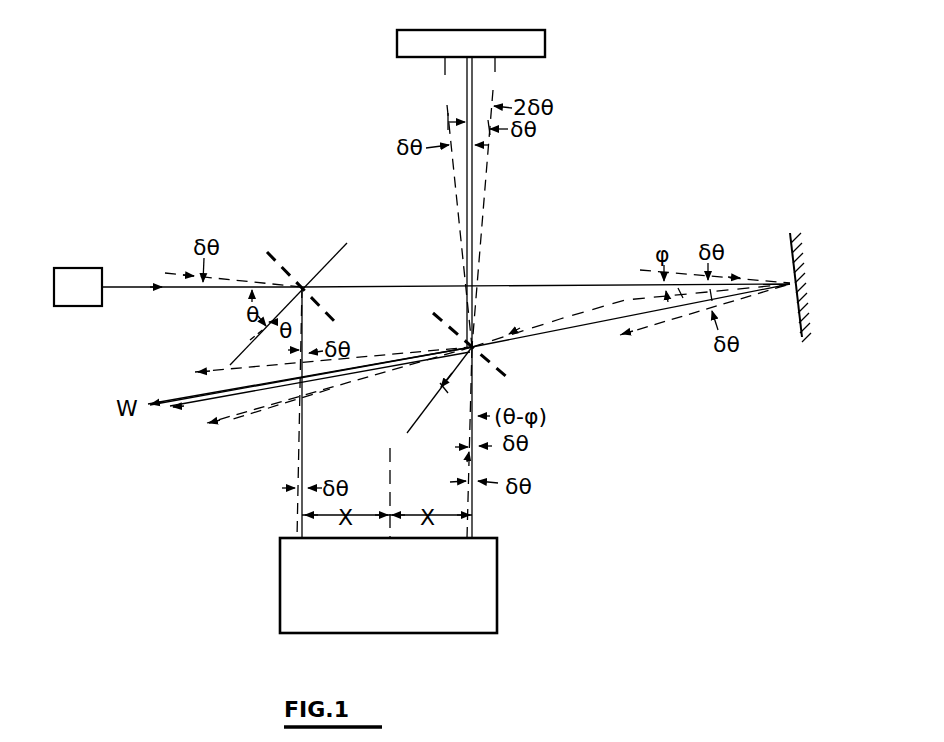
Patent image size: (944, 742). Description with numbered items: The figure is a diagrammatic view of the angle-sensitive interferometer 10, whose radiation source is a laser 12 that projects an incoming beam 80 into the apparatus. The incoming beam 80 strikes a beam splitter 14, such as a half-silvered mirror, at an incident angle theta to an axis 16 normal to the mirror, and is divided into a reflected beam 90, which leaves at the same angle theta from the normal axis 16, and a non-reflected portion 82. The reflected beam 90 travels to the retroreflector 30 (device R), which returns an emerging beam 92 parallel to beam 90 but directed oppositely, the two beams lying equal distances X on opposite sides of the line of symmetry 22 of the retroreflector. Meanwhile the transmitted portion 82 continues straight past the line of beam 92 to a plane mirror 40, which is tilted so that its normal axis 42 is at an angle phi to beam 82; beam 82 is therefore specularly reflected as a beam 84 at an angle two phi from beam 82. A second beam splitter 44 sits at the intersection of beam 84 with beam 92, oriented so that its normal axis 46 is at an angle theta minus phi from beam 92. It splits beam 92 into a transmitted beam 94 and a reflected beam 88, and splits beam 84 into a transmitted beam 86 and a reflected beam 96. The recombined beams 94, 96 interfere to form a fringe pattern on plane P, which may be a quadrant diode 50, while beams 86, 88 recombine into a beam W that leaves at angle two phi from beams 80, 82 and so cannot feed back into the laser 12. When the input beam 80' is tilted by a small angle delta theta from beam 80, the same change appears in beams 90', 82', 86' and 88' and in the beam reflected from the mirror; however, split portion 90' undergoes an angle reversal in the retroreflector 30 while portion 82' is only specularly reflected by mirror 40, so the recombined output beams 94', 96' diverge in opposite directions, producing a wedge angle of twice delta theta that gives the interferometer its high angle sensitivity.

The angle-sensitive interferometer 10 is at (568, 216).
The laser 12 is at (88, 268).
The beam splitter 14 is at (290, 273).
The normal axis 16 is at (236, 352).
The line of symmetry 22 is at (394, 471).
The retroreflector 30 is at (280, 591).
The mirror 40 is at (797, 324).
The normal axis 42 is at (618, 300).
The second beam splitter 44 is at (465, 344).
The normal axis 46 is at (467, 318).
The quadrant diode 50 is at (546, 42).
The incoming beam 80 is at (196, 311).
The input beam 80' is at (209, 258).
The non-reflected portion of beam 82 is at (546, 260).
The split beam portion 82' is at (686, 256).
The reflected beam 84 is at (512, 334).
The transmitted part of beam 84 86 is at (311, 377).
The angle-changed transmitted beam 86' is at (244, 428).
The reflected part of beam 92 88 is at (317, 395).
The angle-changed reflected beam 88' is at (317, 361).
The reflected beam 90 is at (326, 412).
The split beam portion 90' is at (317, 412).
The emerging beam 92 is at (478, 392).
The transmitted part of beam 92 94 is at (410, 202).
The recombined beam portion 94' is at (412, 214).
The reflected part of beam 84 96 is at (526, 297).
The recombined beam portion 96' is at (534, 214).